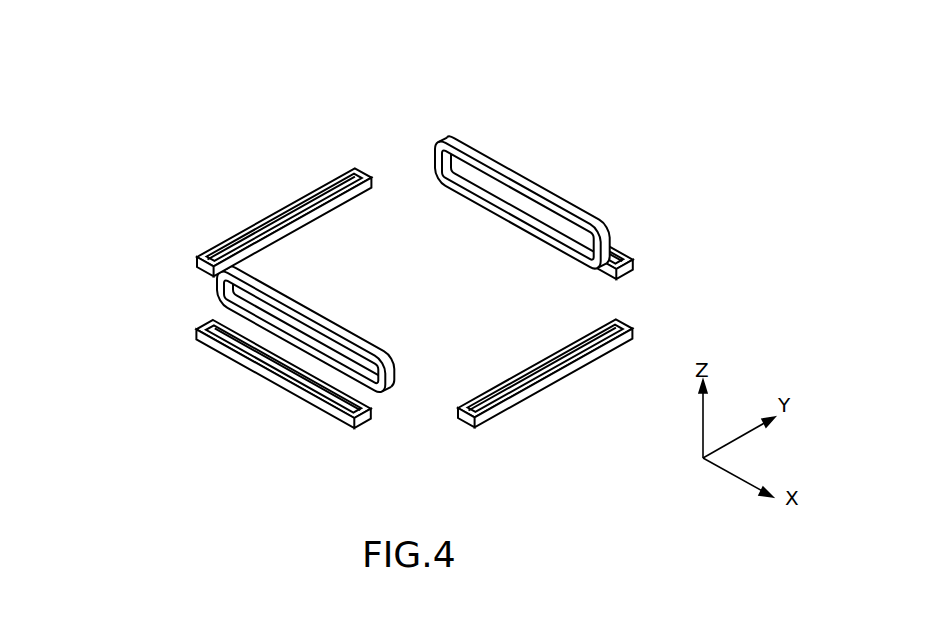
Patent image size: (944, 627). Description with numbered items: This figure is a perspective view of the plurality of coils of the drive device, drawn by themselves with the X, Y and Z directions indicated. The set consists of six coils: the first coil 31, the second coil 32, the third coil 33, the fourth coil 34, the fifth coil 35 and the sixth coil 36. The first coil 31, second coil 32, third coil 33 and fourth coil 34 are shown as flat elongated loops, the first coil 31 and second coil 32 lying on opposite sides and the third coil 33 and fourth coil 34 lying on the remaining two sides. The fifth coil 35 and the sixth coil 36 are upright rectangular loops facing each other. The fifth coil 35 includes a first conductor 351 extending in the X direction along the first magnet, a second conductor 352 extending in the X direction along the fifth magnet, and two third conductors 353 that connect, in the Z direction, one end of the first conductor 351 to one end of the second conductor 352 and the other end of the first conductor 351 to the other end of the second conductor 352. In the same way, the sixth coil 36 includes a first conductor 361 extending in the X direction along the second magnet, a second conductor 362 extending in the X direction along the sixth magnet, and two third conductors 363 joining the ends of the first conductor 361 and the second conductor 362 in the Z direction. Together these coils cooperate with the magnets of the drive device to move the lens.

The first coil 31 is at (213, 352).
The second coil 32 is at (623, 255).
The third coil 33 is at (318, 218).
The fourth coil 34 is at (535, 395).
The fifth coil 35 is at (292, 343).
The first conductor 351 is at (302, 350).
The second conductor 352 is at (370, 338).
The third conductors 353 is at (215, 285).
The sixth coil 36 is at (544, 182).
The first conductor 361 is at (513, 220).
The second conductor 362 is at (497, 157).
The third conductors 363 is at (437, 156).